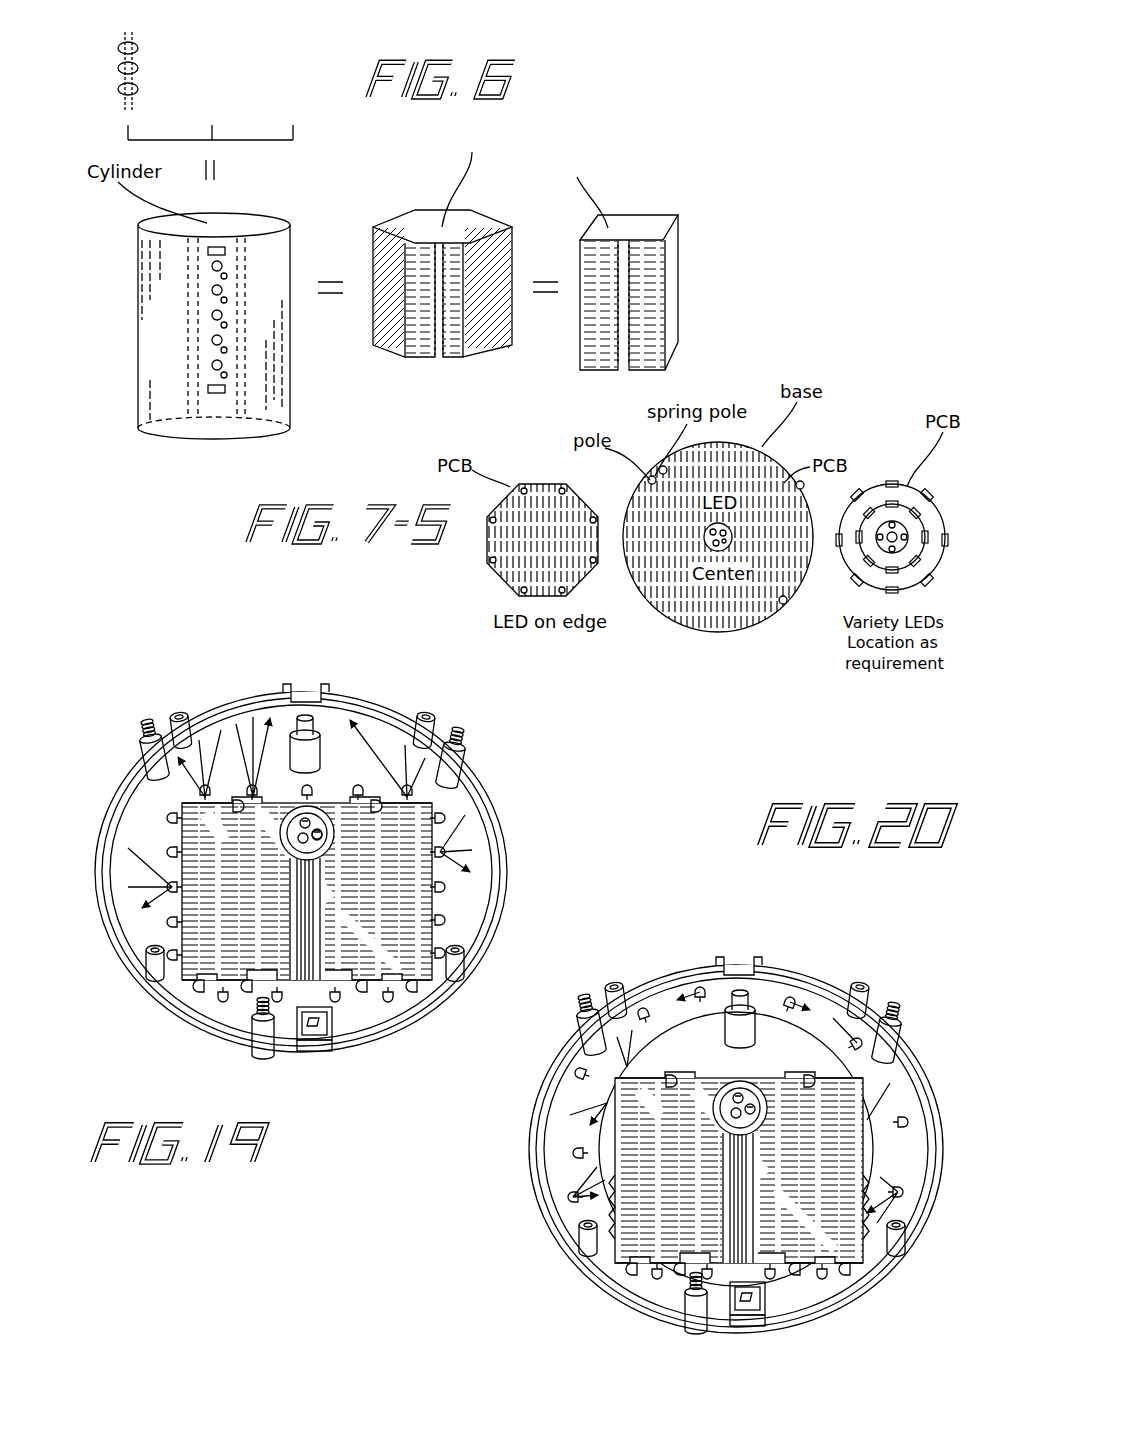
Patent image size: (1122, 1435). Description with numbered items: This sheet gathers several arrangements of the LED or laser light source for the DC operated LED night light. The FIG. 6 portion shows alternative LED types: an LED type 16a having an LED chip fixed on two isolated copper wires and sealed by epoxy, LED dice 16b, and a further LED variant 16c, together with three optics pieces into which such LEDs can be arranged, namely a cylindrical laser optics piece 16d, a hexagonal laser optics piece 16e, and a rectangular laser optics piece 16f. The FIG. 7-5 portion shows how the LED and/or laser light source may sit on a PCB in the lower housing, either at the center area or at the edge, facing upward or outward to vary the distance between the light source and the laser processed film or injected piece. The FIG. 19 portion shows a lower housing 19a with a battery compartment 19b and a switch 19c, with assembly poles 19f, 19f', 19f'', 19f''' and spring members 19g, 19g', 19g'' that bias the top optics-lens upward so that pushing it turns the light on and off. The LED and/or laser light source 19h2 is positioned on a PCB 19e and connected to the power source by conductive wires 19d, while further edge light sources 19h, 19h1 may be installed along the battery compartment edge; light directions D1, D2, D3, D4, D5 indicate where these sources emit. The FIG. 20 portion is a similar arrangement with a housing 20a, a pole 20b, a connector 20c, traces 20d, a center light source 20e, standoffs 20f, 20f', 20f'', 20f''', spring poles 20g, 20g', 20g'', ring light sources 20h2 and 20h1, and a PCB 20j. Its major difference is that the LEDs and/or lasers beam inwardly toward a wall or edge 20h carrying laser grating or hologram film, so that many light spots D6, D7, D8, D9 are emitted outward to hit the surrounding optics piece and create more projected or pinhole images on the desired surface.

In FIG. 6, the LED type 16a is at (138, 45).
In FIG. 6, the LED dice 16b is at (138, 67).
In FIG. 6, the LED 16c is at (138, 89).
In FIG. 6, the cylindrical laser optics piece 16d is at (227, 220).
In FIG. 6, the hexagonal laser optics piece 16e is at (428, 350).
In FIG. 6, the rectangular laser optics piece 16f is at (638, 223).
In FIG. 19, the lower housing 19a is at (223, 707).
In FIG. 19, the battery compartment 19b is at (330, 800).
In FIG. 19, the switch 19c is at (320, 1042).
In FIG. 19, the conductive wires 19d is at (313, 897).
In FIG. 19, the PCB 19e is at (325, 839).
In FIG. 19, the assembly pole 19f is at (151, 699).
In FIG. 19, the assembly pole 19f' is at (487, 703).
In FIG. 19, the assembly pole 19f'' is at (438, 1023).
In FIG. 19, the assembly pole 19f''' is at (118, 1004).
In FIG. 19, the spring member 19g is at (118, 731).
In FIG. 19, the spring member 19g' is at (515, 757).
In FIG. 19, the spring member 19g'' is at (208, 1041).
In FIG. 19, the edge LED 19h is at (170, 817).
In FIG. 19, the edge LED 19h1 is at (450, 814).
In FIG. 19, the LED and/or laser light source 19h2 is at (290, 842).
In FIG. 19, the light direction D1 is at (207, 760).
In FIG. 19, the light direction D2 is at (255, 757).
In FIG. 19, the light direction D3 is at (385, 750).
In FIG. 19, the light direction D4 is at (467, 857).
In FIG. 19, the light direction D5 is at (133, 890).
In FIG. 20, the frame ring 20a is at (830, 980).
In FIG. 20, the pole 20b is at (739, 993).
In FIG. 20, the connector 20c is at (755, 1318).
In FIG. 20, the trace 20d is at (727, 1200).
In FIG. 20, the center LED module 20e is at (722, 1120).
In FIG. 20, the standoff 20f is at (644, 930).
In FIG. 20, the standoff 20f' is at (884, 960).
In FIG. 20, the standoff 20f'' is at (568, 1282).
In FIG. 20, the standoff 20f''' is at (922, 1284).
In FIG. 20, the spring pole 20g is at (601, 978).
In FIG. 20, the spring pole 20g' is at (918, 992).
In FIG. 20, the spring pole 20g'' is at (658, 1327).
In FIG. 20, the wall or edge 20h is at (607, 1203).
In FIG. 20, the edge LED 20h1 is at (570, 1172).
In FIG. 20, the ring LED 20h2 is at (687, 988).
In FIG. 20, the PCB 20j is at (708, 1078).
In FIG. 20, the light direction D6 is at (577, 1033).
In FIG. 20, the light spots emitted outward D7 is at (890, 1097).
In FIG. 20, the light spots emitted outward D8 is at (560, 1103).
In FIG. 20, the light spots emitted outward D9 is at (880, 1140).